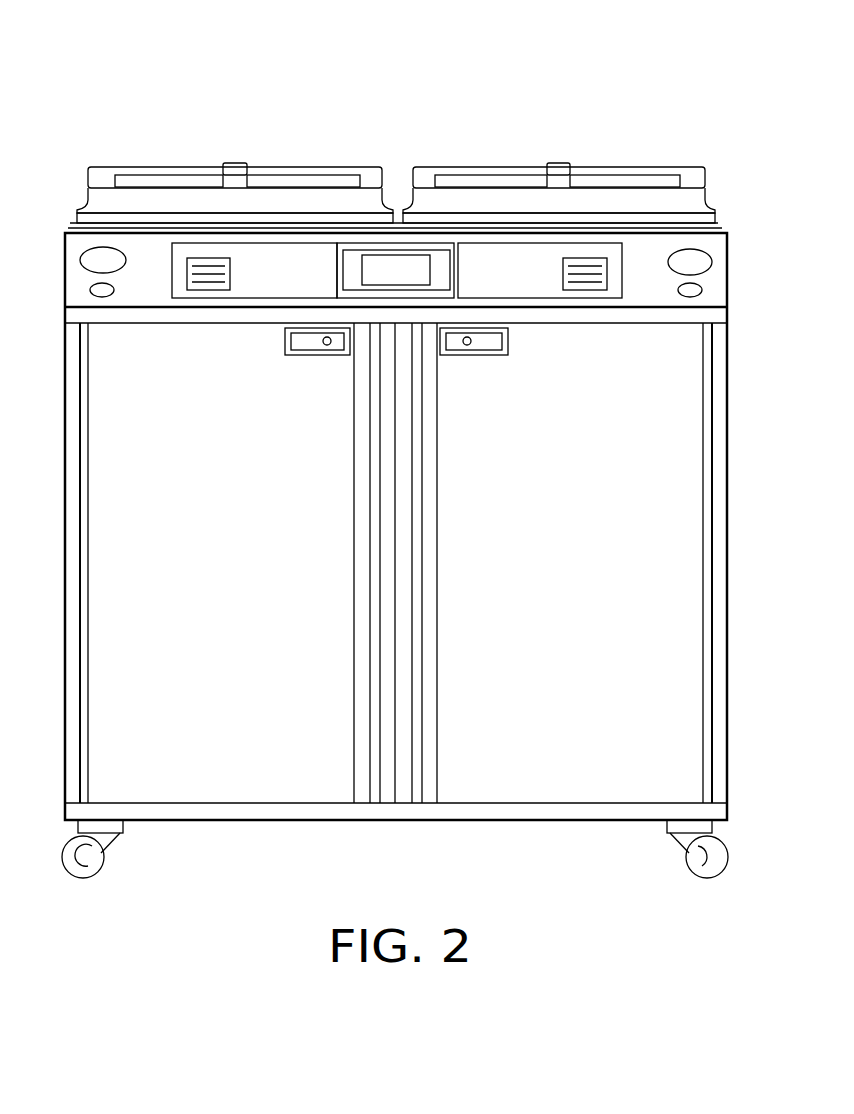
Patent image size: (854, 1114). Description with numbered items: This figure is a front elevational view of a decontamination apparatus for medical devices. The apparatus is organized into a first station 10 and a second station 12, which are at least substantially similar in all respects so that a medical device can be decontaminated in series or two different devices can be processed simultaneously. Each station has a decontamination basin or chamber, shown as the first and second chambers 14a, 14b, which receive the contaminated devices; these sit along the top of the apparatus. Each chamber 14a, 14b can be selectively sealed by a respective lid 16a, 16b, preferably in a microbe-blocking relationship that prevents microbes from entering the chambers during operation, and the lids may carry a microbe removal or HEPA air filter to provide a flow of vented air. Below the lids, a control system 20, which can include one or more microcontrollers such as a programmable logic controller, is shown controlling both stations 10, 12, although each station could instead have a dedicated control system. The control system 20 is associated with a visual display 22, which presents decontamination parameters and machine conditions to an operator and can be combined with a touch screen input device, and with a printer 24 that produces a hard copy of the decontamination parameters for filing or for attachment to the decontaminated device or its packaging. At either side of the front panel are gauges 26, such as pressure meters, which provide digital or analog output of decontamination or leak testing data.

The first station 10 is at (230, 125).
The second station 12 is at (562, 125).
The first decontamination basin 14a is at (235, 169).
The second decontamination basin 14b is at (559, 169).
The lid 16a is at (233, 165).
The lid 16b is at (560, 165).
The control system 20 is at (468, 269).
The visual display 22 is at (365, 270).
The printer 24 is at (230, 275).
The gauges 26 is at (92, 262).